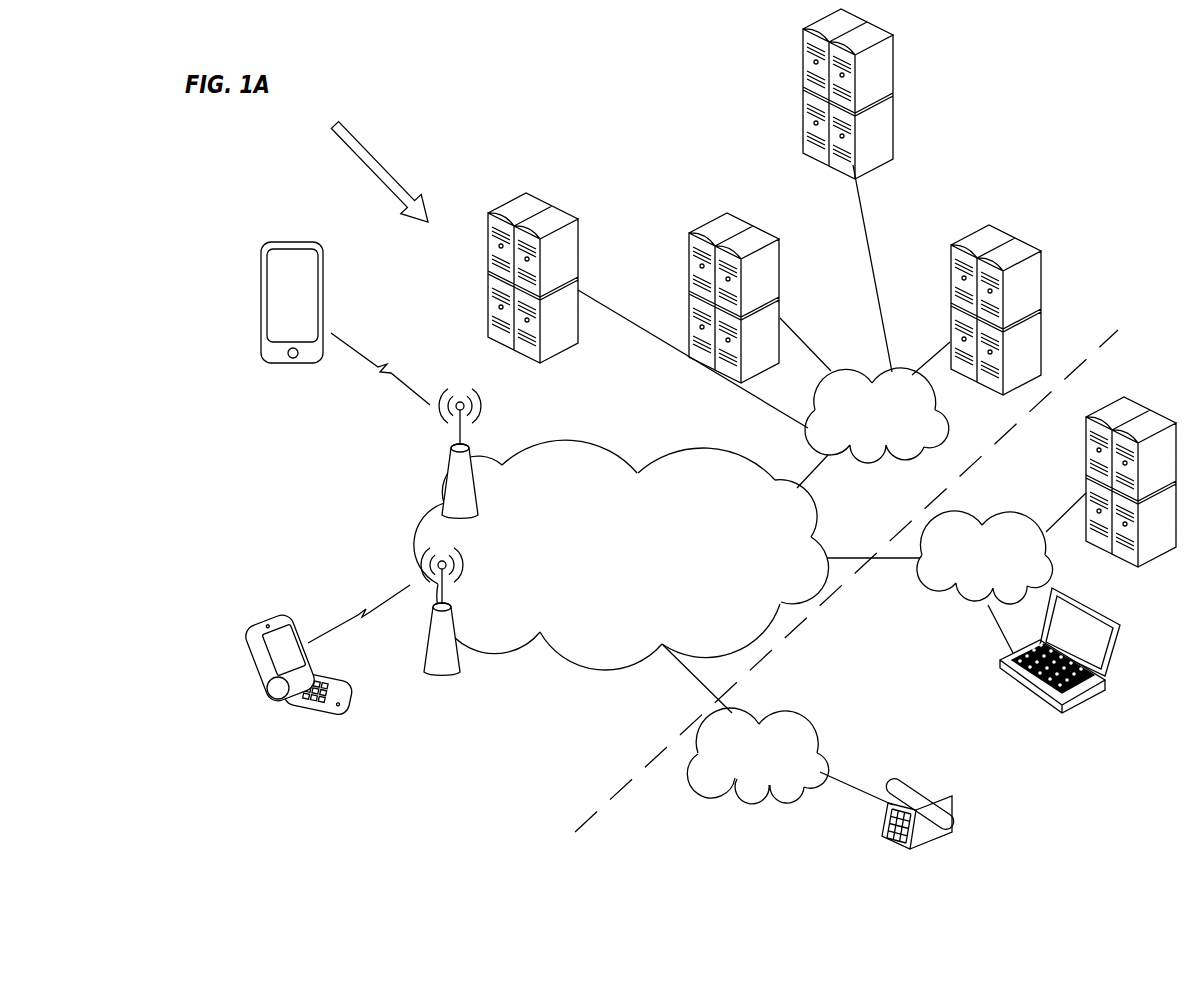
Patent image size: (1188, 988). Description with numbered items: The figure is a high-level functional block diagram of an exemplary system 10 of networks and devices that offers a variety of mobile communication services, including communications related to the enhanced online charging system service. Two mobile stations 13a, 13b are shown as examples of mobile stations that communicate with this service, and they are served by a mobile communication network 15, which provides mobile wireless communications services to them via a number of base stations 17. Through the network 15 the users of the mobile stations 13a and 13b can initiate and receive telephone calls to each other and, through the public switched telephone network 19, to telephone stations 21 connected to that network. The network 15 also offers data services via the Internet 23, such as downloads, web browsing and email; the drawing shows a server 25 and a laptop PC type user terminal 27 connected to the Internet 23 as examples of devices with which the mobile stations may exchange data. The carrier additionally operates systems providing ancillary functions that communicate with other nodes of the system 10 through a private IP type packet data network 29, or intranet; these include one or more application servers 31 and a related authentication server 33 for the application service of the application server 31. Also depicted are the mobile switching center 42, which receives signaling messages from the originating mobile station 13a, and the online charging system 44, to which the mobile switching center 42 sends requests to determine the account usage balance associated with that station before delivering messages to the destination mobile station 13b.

The system 10 is at (371, 165).
The mobile station 13a is at (243, 646).
The mobile station 13b is at (262, 283).
The mobile communication network 15 is at (526, 448).
The base station 17 is at (447, 470).
The public switched telephone network (PSTN) 19 is at (814, 740).
The telephone station 21 is at (878, 838).
The Internet 23 is at (922, 600).
The server 25 is at (1086, 480).
The laptop PC type user terminal 27 is at (1032, 696).
The private IP type packet data network 29 is at (945, 432).
The application server 31 is at (780, 255).
The authentication server 33 is at (1041, 308).
The mobile switching center (MSC) 42 is at (893, 55).
The online charging system (OCS) 44 is at (578, 220).